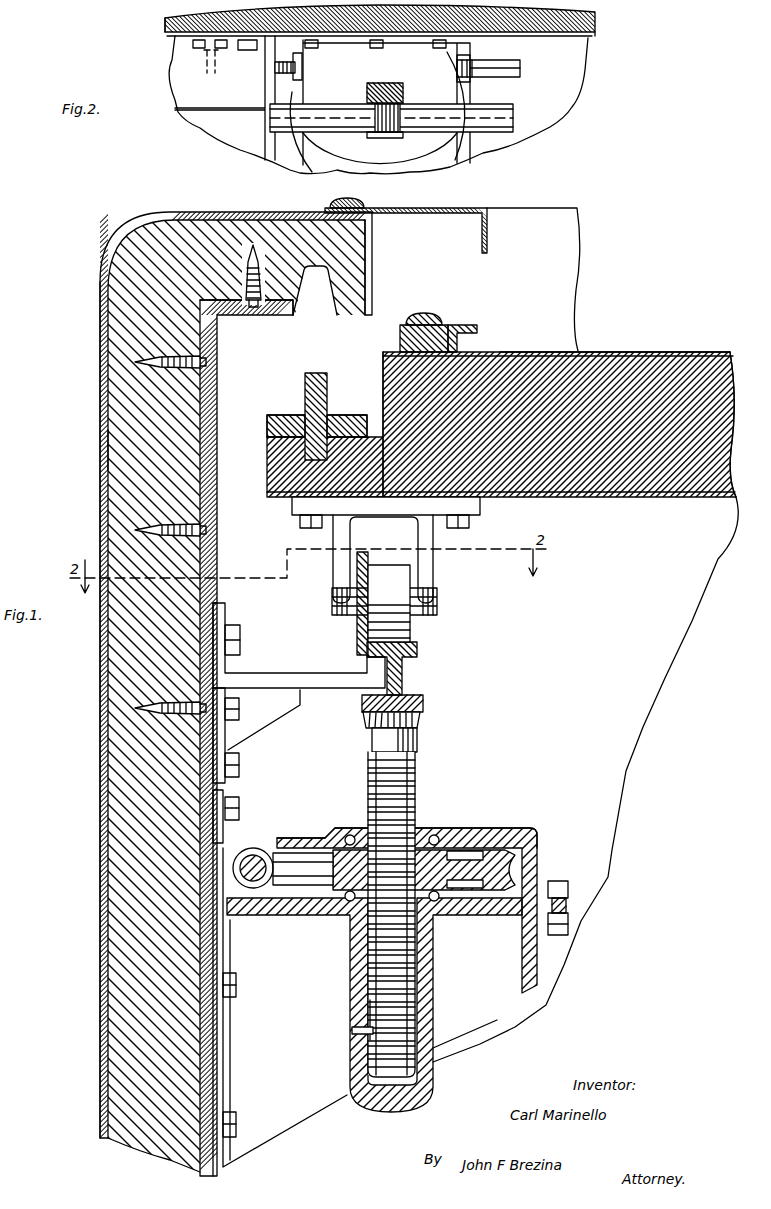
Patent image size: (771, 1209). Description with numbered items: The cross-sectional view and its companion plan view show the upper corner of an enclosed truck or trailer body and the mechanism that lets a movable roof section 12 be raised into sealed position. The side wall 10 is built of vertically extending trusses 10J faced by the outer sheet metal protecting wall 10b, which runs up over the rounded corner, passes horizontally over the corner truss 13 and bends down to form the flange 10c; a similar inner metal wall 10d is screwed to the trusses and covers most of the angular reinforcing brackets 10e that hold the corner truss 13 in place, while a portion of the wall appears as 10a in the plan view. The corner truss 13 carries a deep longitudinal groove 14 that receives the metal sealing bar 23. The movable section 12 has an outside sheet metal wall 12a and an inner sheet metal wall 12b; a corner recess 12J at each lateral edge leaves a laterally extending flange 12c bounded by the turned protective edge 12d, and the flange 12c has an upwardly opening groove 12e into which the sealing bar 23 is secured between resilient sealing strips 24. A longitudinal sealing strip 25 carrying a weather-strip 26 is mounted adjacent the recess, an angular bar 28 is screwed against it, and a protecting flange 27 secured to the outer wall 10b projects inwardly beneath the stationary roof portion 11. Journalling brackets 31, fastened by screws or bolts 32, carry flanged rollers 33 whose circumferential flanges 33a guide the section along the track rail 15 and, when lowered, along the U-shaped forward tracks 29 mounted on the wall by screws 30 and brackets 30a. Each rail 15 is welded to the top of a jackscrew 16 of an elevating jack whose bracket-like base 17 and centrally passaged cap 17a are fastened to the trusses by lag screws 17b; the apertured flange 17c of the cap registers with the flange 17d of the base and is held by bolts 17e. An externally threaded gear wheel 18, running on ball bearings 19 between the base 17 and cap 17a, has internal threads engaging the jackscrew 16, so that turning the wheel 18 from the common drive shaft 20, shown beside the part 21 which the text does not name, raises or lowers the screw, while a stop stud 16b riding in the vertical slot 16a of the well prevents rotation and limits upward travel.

In FIG. 1, the side wall 10 is at (94, 399).
In FIG. 2, the wall panel 10a is at (480, 38).
In FIG. 1, the outer sheet metal protecting wall 10b is at (100, 466).
In FIG. 1, the flange 10c is at (372, 276).
In FIG. 1, the inner metal wall 10d is at (216, 580).
In FIG. 2, the inner metal wall 10d is at (597, 36).
In FIG. 1, the angular reinforcing bracket 10e is at (218, 392).
In FIG. 2, the angular reinforcing bracket 10e is at (596, 20).
In FIG. 1, the vertically extending truss 10J is at (135, 428).
In FIG. 1, the stationary roof portion 11 is at (578, 240).
In FIG. 1, the movable roof section 12 is at (740, 352).
In FIG. 1, the outside sheet metal wall 12a is at (622, 351).
In FIG. 1, the inner sheet metal wall 12b is at (702, 496).
In FIG. 1, the laterally extending flange 12c is at (290, 474).
In FIG. 1, the protective edge flange 12d is at (384, 356).
In FIG. 1, the upwardly opening groove 12e is at (305, 450).
In FIG. 1, the corner recess 12J is at (368, 497).
In FIG. 1, the corner truss 13 is at (258, 246).
In FIG. 1, the longitudinally extending groove 14 is at (320, 292).
In FIG. 1, the track 15 is at (404, 675).
In FIG. 2, the track 15 is at (486, 133).
In FIG. 1, the jackscrew 16 is at (420, 722).
In FIG. 1, the vertical slot 16a is at (349, 1010).
In FIG. 1, the stop stud 16b is at (352, 1031).
In FIG. 1, the bracket-like base portion 17 is at (520, 987).
In FIG. 1, the metal cap 17a is at (520, 826).
In FIG. 2, the metal cap 17a is at (420, 155).
In FIG. 1, the lag screw 17b is at (240, 808).
In FIG. 2, the lag screw 17b is at (318, 48).
In FIG. 1, the apertured flange 17c is at (570, 890).
In FIG. 2, the apertured flange 17c is at (470, 150).
In FIG. 1, the flange 17d is at (568, 906).
In FIG. 1, the bolt 17e is at (570, 930).
In FIG. 1, the externally threaded gear wheel 18 is at (512, 868).
In FIG. 1, the ball bearing 19 is at (436, 835).
In FIG. 1, the common drive shaft 20 is at (260, 878).
In FIG. 2, the common drive shaft 20 is at (277, 74).
In FIG. 1, the ring 21 is at (240, 884).
In FIG. 1, the sealing bar 23 is at (328, 380).
In FIG. 1, the resilient sealing strip 24 is at (290, 418).
In FIG. 1, the longitudinal sealing strip 25 is at (450, 338).
In FIG. 1, the weather-strip 26 is at (426, 316).
In FIG. 1, the protecting flange 27 is at (468, 207).
In FIG. 1, the angular bar 28 is at (472, 327).
In FIG. 1, the track 29 is at (330, 688).
In FIG. 2, the track 29 is at (208, 98).
In FIG. 1, the bolt or screw 30 is at (241, 644).
In FIG. 2, the bolt or screw 30 is at (257, 48).
In FIG. 1, the bracket 30a is at (252, 742).
In FIG. 1, the journalling bracket 31 is at (427, 562).
In FIG. 2, the journalling bracket 31 is at (388, 95).
In FIG. 1, the screw or bolt 32 is at (312, 529).
In FIG. 1, the flanged roller 33 is at (400, 578).
In FIG. 2, the flanged roller 33 is at (372, 118).
In FIG. 1, the circumferential flange 33a is at (358, 628).